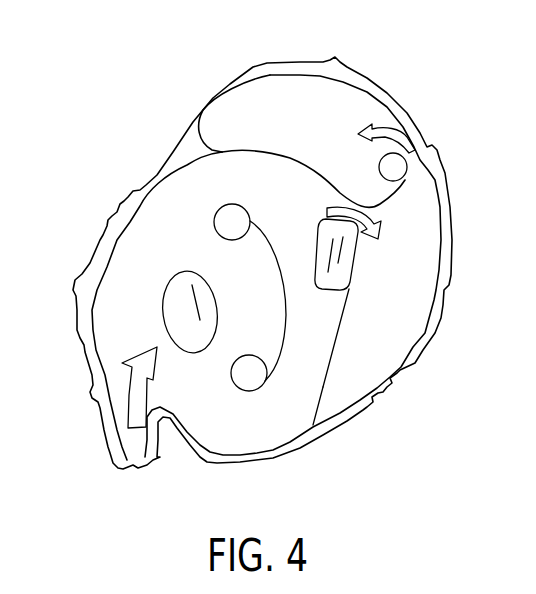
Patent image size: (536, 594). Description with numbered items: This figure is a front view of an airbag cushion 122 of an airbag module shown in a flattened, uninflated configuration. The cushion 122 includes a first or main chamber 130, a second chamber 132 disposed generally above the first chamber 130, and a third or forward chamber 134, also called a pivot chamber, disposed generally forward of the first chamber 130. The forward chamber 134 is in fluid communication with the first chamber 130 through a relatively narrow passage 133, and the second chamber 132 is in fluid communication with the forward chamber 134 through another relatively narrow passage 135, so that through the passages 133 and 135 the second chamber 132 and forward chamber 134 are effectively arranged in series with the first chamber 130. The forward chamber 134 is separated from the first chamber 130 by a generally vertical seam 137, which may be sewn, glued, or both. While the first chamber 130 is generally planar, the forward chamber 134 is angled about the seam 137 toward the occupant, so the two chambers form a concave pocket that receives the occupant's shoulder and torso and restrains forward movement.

The airbag cushion 122 is at (98, 112).
The first chamber 130 is at (123, 270).
The second chamber 132 is at (348, 97).
The passage 133 is at (389, 218).
The forward chamber 134 is at (391, 323).
The passage 135 is at (428, 179).
The seam 137 is at (322, 387).